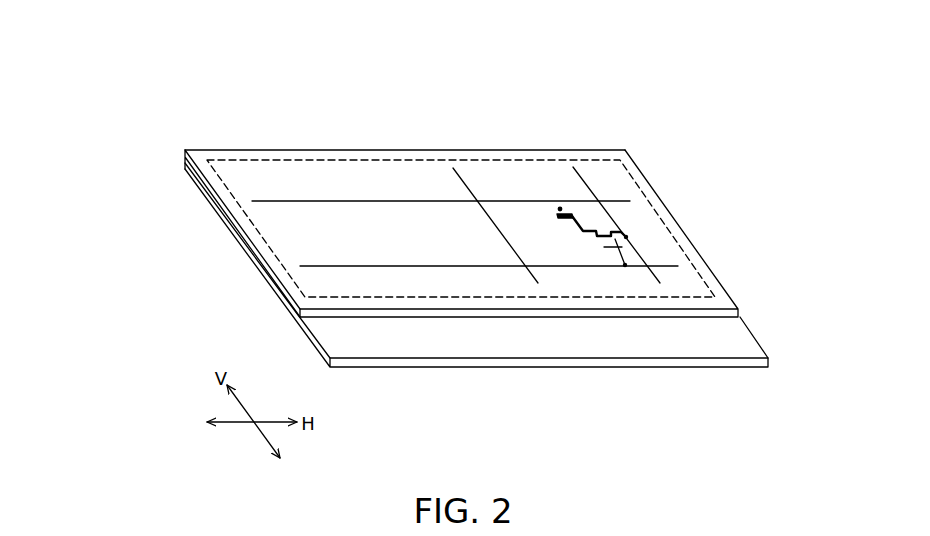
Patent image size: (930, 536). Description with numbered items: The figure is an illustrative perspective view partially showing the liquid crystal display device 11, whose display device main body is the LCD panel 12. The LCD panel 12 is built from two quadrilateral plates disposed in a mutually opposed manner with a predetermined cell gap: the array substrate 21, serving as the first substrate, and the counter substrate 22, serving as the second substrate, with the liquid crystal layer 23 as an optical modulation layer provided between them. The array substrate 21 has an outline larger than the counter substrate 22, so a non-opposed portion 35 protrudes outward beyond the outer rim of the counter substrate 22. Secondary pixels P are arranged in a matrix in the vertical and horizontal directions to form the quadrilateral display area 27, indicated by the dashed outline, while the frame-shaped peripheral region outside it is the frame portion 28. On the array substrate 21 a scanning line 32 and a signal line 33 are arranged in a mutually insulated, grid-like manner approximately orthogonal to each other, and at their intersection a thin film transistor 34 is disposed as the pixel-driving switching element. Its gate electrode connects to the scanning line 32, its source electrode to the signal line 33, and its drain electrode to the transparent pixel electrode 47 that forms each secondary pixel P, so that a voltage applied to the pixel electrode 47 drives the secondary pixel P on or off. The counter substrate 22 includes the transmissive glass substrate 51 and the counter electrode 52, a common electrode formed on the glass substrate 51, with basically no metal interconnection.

The liquid crystal display device 11 is at (514, 62).
The LCD panel 12 is at (627, 384).
The array substrate 21 is at (716, 367).
The counter substrate 22 is at (405, 149).
The liquid crystal layer 23 is at (567, 219).
The display area 27 is at (518, 160).
The frame portion 28 is at (222, 197).
The scanning line 32 is at (349, 201).
The signal line 33 is at (467, 181).
The thin film transistor 34 is at (628, 237).
The non-opposed portion 35 is at (541, 350).
The pixel electrode 47 is at (588, 232).
The glass substrate 51 is at (246, 149).
The counter electrode 52 is at (561, 211).
The secondary pixel P is at (585, 218).